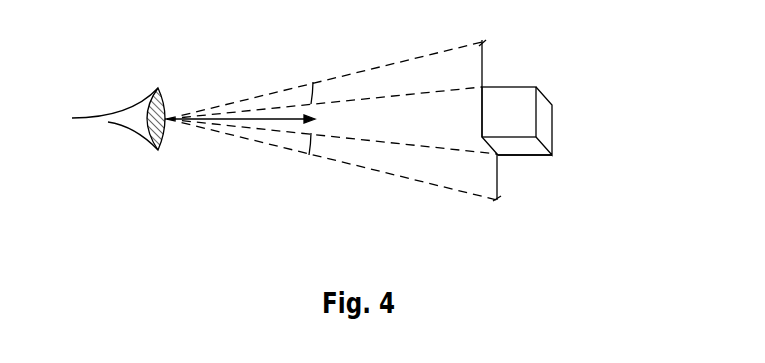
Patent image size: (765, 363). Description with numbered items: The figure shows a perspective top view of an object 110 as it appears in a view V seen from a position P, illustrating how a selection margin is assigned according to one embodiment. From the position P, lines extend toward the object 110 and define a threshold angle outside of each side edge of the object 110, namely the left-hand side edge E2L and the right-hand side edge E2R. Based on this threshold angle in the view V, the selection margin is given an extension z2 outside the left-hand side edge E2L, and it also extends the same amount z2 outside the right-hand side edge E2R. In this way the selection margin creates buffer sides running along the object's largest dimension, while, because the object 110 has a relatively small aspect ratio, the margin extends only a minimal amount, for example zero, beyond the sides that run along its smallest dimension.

The position P is at (117, 109).
The view V is at (250, 120).
The object 110 is at (573, 121).
The left-hand side edge E2L is at (568, 85).
The right-hand side edge E2R is at (569, 178).
The extension z2 is at (549, 123).